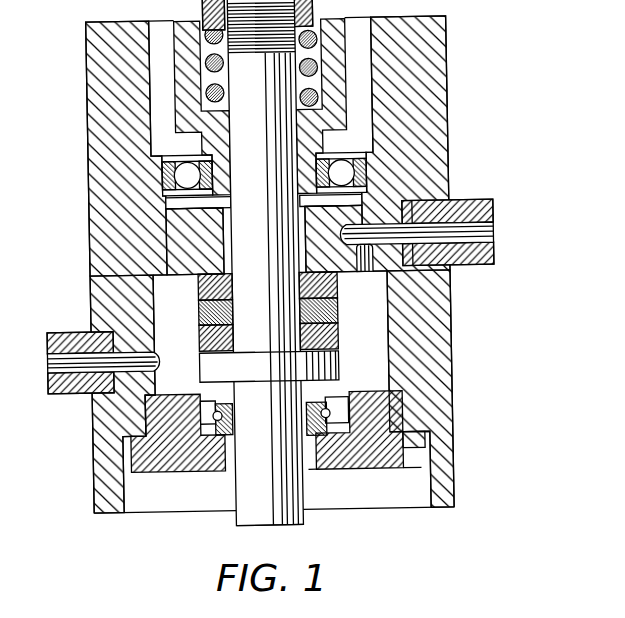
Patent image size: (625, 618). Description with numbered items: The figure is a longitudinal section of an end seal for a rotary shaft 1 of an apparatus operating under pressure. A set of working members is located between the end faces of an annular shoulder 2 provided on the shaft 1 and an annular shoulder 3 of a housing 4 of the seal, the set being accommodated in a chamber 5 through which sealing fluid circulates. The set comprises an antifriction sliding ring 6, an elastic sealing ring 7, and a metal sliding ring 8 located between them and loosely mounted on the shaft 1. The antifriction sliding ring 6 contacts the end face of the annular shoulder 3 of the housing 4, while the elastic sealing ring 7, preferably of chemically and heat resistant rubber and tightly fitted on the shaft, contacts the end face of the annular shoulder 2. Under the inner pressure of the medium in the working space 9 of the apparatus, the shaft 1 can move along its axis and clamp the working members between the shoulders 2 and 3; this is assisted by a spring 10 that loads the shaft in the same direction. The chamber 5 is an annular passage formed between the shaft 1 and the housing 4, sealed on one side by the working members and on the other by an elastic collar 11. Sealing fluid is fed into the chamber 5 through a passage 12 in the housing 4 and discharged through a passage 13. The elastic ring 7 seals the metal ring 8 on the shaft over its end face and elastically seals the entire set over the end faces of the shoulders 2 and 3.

The rotary shaft 1 is at (299, 489).
The annular shoulder of the shaft 2 is at (338, 372).
The annular shoulder of the housing 3 is at (216, 233).
The housing 4 is at (88, 199).
The chamber 5 is at (380, 341).
The antifriction sliding ring 6 is at (232, 286).
The elastic sealing ring 7 is at (232, 332).
The metal sliding ring 8 is at (337, 308).
The working space 9 is at (405, 499).
The spring 10 is at (228, 67).
The elastic collar 11 is at (352, 433).
The passage 12 is at (156, 362).
The passage 13 is at (386, 248).